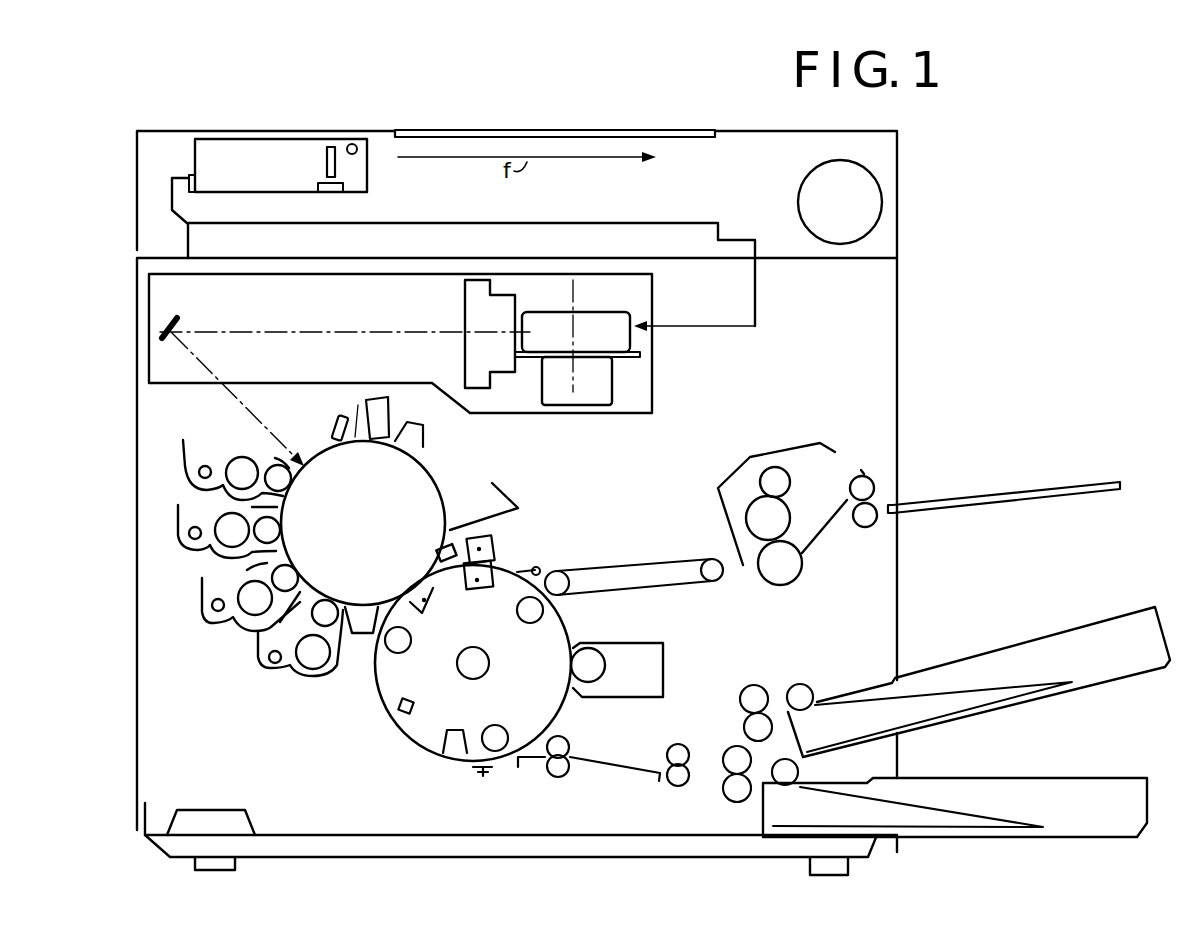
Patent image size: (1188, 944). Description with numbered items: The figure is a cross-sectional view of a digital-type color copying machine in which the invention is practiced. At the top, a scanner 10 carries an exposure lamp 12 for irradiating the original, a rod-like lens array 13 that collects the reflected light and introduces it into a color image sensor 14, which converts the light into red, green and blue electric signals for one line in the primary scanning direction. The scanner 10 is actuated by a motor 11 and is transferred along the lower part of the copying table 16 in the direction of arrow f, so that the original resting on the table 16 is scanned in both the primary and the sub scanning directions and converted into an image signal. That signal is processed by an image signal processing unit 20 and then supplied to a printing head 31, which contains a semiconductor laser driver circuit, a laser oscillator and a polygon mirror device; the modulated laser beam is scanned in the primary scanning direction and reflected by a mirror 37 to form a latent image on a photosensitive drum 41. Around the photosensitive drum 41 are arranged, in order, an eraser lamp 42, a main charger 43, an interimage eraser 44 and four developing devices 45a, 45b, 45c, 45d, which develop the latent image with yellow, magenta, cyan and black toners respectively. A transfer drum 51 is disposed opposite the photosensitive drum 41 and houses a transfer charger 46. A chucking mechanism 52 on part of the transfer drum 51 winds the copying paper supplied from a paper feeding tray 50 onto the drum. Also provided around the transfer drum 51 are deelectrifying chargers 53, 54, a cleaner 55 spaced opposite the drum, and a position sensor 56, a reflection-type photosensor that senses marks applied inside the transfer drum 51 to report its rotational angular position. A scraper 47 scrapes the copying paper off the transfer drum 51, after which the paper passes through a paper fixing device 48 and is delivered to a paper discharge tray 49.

The scanner 10 is at (262, 134).
The motor 11 is at (882, 212).
The exposure lamp 12 is at (355, 146).
The rod-like lens array 13 is at (327, 160).
The color image sensor 14 is at (330, 191).
The copying table 16 is at (652, 130).
The image signal processing unit 20 is at (202, 238).
The printing head 31 is at (635, 340).
The mirror 37 is at (170, 320).
The photosensitive drum 41 is at (372, 520).
The eraser lamp 42 is at (427, 433).
The main charger 43 is at (378, 398).
The interimage eraser 44 is at (338, 415).
The developing device 45a is at (188, 466).
The developing device 45b is at (178, 540).
The developing device 45c is at (200, 626).
The developing device 45d is at (268, 673).
The transfer charger 46 is at (432, 614).
The scraper 47 is at (532, 568).
The paper fixing device 48 is at (752, 457).
The paper discharge tray 49 is at (1020, 484).
The paper feeding tray 50 is at (1100, 780).
The transfer drum 51 is at (428, 750).
The chucking mechanism 52 is at (483, 773).
The deelectrifying charger 53 is at (493, 547).
The deelectrifying charger 54 is at (490, 587).
The cleaner 55 is at (625, 688).
The position sensor 56 is at (402, 713).